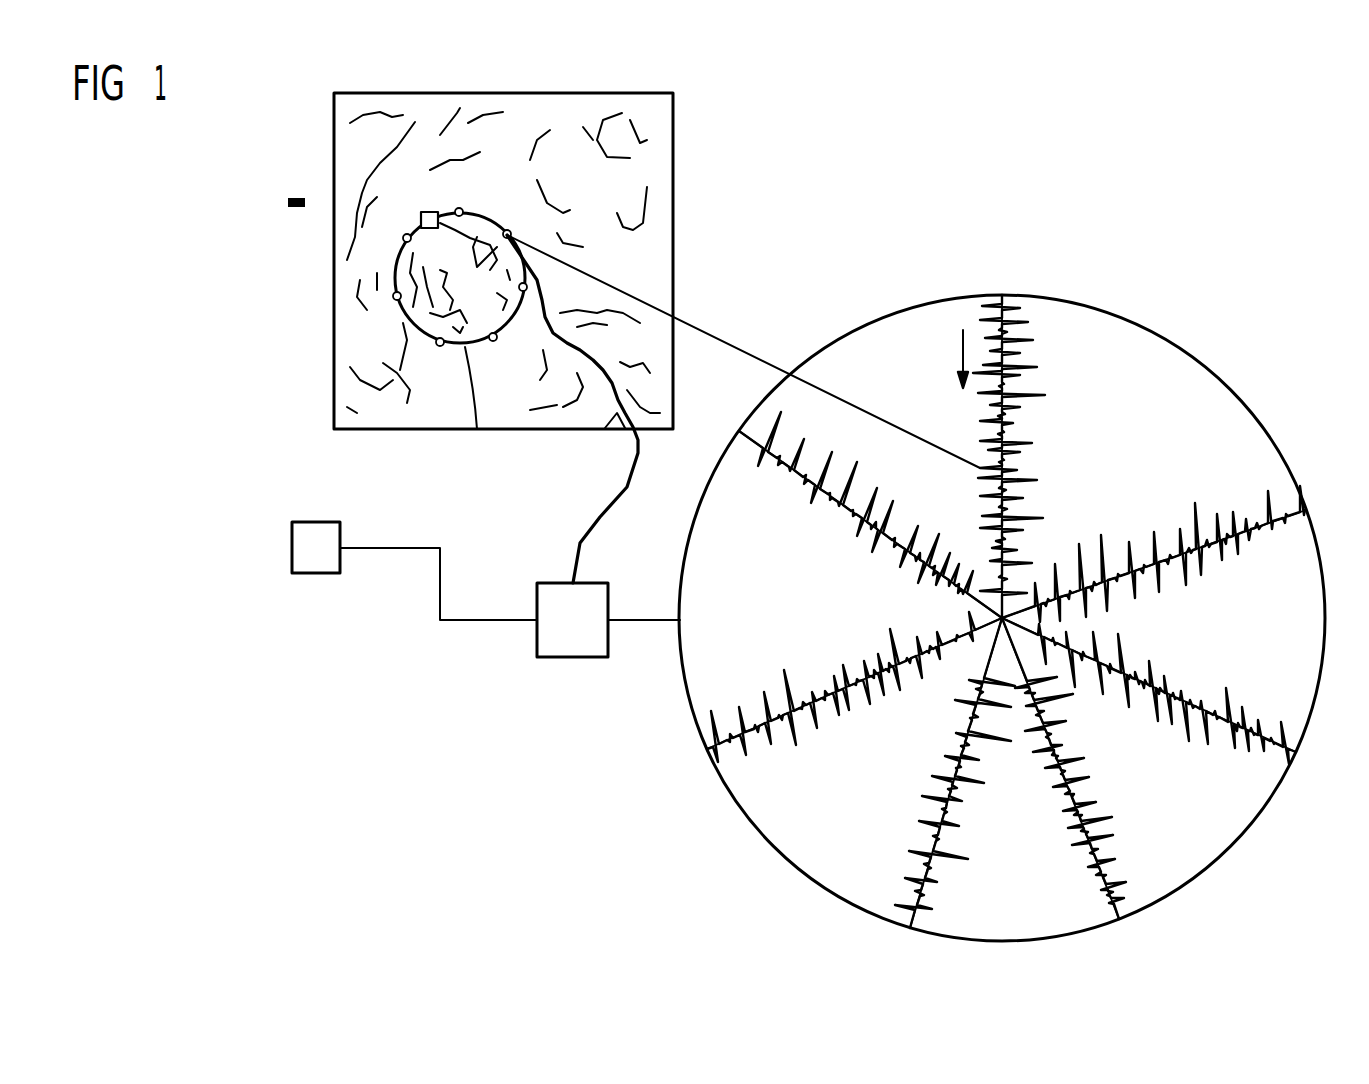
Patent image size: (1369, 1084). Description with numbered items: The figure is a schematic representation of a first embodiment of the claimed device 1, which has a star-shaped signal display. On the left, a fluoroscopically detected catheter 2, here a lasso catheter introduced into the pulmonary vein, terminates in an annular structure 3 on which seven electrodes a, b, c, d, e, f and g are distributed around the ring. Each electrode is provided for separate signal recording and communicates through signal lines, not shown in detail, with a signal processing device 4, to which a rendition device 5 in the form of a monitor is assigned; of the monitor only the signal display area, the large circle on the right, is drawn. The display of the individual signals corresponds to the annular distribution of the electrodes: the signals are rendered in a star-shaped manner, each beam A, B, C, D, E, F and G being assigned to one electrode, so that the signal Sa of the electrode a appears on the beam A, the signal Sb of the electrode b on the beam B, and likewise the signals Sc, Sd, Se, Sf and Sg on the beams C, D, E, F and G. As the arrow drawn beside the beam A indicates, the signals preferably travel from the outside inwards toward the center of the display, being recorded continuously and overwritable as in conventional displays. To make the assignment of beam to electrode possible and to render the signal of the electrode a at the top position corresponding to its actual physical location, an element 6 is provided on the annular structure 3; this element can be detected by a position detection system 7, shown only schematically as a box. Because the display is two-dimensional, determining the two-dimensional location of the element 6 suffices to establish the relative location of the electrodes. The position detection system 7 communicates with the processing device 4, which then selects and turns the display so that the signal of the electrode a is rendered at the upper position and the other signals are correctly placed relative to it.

The device 1 is at (865, 170).
The catheter 2 is at (606, 434).
The annular structure 3 is at (477, 430).
The signal processing device 4 is at (575, 659).
The rendition device 5 is at (678, 720).
The element 6 is at (421, 220).
The position detection system 7 is at (318, 575).
The electrode a is at (458, 208).
The electrode b is at (508, 230).
The electrode c is at (523, 291).
The electrode d is at (493, 343).
The electrode e is at (440, 346).
The electrode f is at (397, 300).
The electrode g is at (402, 239).
The beam A is at (987, 310).
The beam B is at (1260, 528).
The beam C is at (1257, 743).
The beam D is at (1103, 887).
The beam E is at (913, 912).
The beam F is at (780, 740).
The beam G is at (825, 500).
The signal Sa is at (1030, 312).
The signal Sb is at (1215, 560).
The signal Sc is at (1170, 730).
The signal Sd is at (1062, 817).
The signal Se is at (915, 848).
The signal Sf is at (843, 662).
The signal Sg is at (772, 470).